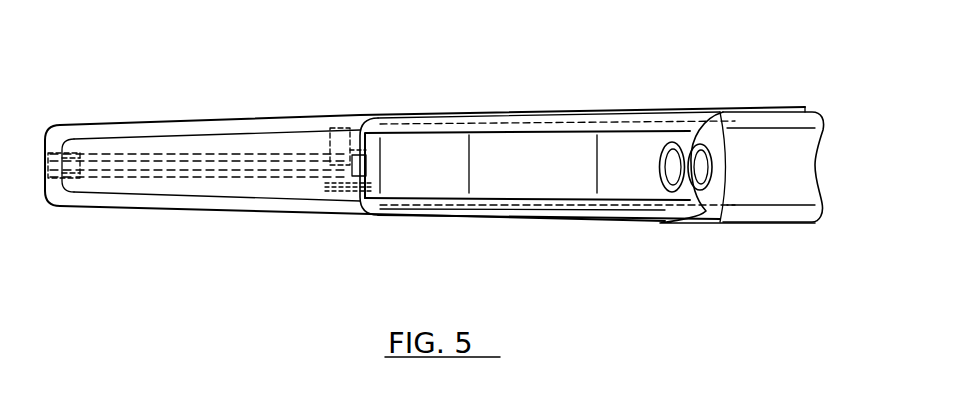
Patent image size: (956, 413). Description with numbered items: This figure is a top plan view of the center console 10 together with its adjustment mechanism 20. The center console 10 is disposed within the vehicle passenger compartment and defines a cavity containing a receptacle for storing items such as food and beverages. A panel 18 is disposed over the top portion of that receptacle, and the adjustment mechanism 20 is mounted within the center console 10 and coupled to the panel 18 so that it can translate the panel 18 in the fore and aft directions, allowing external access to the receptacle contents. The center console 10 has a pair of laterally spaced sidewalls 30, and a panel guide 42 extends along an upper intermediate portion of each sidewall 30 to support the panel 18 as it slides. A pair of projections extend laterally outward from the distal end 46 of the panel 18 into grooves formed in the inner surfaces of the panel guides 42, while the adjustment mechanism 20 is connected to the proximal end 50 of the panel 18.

The center console 10 is at (196, 76).
The panel 18 is at (555, 180).
The adjustment mechanism 20 is at (282, 180).
The sidewall 30 is at (486, 113).
The panel guide 42 is at (534, 122).
The distal end 46 is at (628, 152).
The proximal end 50 is at (370, 162).